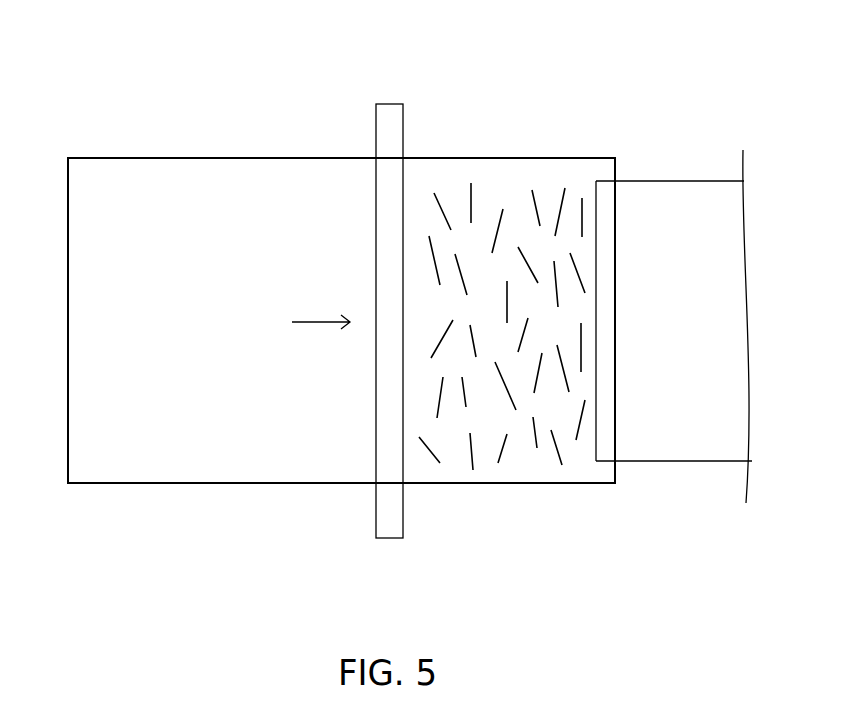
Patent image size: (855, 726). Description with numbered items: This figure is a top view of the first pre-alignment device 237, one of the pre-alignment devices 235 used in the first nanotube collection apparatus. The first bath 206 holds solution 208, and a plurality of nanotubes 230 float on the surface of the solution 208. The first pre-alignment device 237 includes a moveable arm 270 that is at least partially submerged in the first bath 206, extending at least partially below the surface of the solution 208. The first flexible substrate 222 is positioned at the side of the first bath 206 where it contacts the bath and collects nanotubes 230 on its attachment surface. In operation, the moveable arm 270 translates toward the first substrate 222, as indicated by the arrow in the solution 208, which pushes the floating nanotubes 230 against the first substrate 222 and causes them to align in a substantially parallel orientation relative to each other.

The first bath 206 is at (194, 158).
The solution 208 is at (207, 334).
The first flexible substrate 222 is at (672, 192).
The nanotubes 230 is at (561, 190).
The pre-alignment device 235 is at (438, 290).
The first pre-alignment device 237 is at (376, 118).
The moveable arm 270 is at (392, 130).